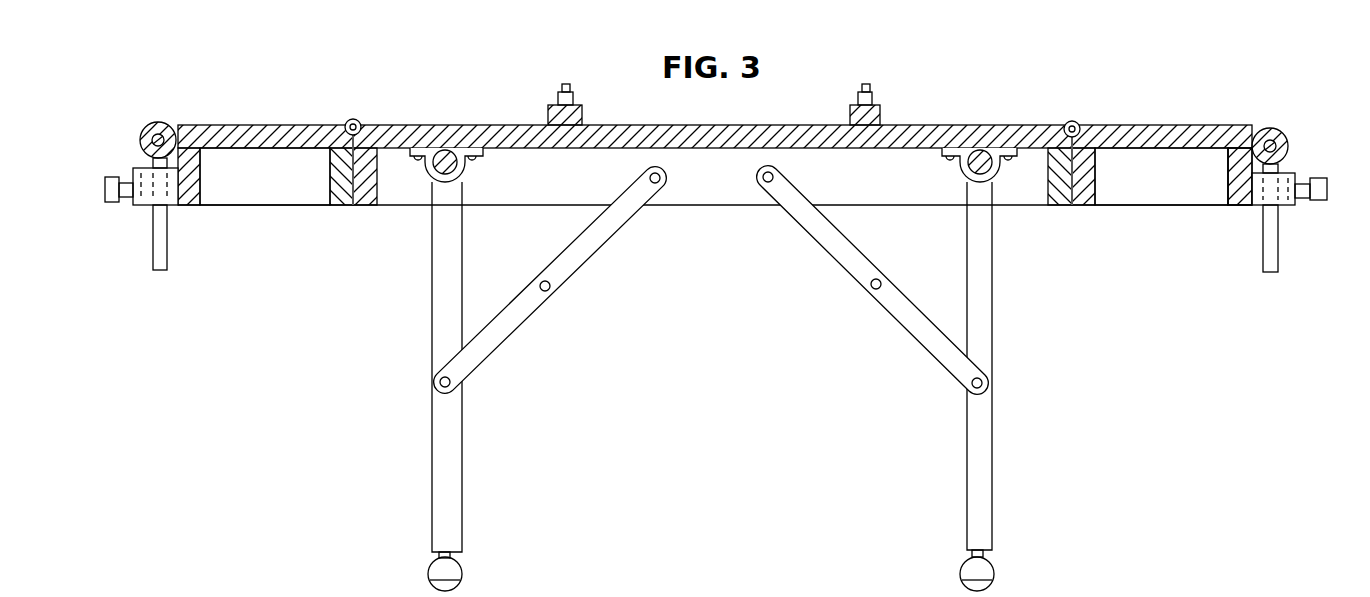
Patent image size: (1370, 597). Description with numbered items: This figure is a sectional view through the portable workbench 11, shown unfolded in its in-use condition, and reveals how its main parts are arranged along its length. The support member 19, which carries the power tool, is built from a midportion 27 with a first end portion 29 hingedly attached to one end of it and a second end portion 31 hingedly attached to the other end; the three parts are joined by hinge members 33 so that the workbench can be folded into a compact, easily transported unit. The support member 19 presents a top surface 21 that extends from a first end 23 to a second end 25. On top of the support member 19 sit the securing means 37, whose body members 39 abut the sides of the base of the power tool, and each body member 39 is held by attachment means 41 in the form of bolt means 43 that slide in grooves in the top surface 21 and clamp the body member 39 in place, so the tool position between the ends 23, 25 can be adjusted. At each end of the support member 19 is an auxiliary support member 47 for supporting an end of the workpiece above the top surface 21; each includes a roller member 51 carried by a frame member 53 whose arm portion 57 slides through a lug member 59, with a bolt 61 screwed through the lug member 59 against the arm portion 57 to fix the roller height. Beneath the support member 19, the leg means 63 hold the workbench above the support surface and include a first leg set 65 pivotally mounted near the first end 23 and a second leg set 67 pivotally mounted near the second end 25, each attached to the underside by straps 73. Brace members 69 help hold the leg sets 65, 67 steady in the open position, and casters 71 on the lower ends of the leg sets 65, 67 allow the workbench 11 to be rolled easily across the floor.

The portable workbench 11 is at (1282, 92).
The support member 19 is at (985, 118).
The top surface 21 is at (930, 140).
The first end 23 is at (1240, 106).
The second end 25 is at (125, 106).
The midportion 27 is at (710, 126).
The first end portion 29 is at (1176, 126).
The second end portion 31 is at (262, 124).
The hinge members 33 is at (352, 119).
The securing means 37 is at (545, 100).
The body member 39 is at (548, 113).
The attachment means 41 is at (578, 78).
The bolt means 43 is at (575, 100).
The auxiliary support members 47 is at (130, 128).
The roller member 51 is at (168, 124).
The frame member 53 is at (140, 250).
The second arm portion 57 is at (167, 258).
The lug members 59 is at (144, 205).
The bolts 61 is at (105, 196).
The leg means 63 is at (400, 406).
The first leg set 65 is at (980, 446).
The second leg set 67 is at (462, 450).
The brace members 69 is at (531, 308).
The casters 71 is at (462, 560).
The straps 73 is at (428, 175).